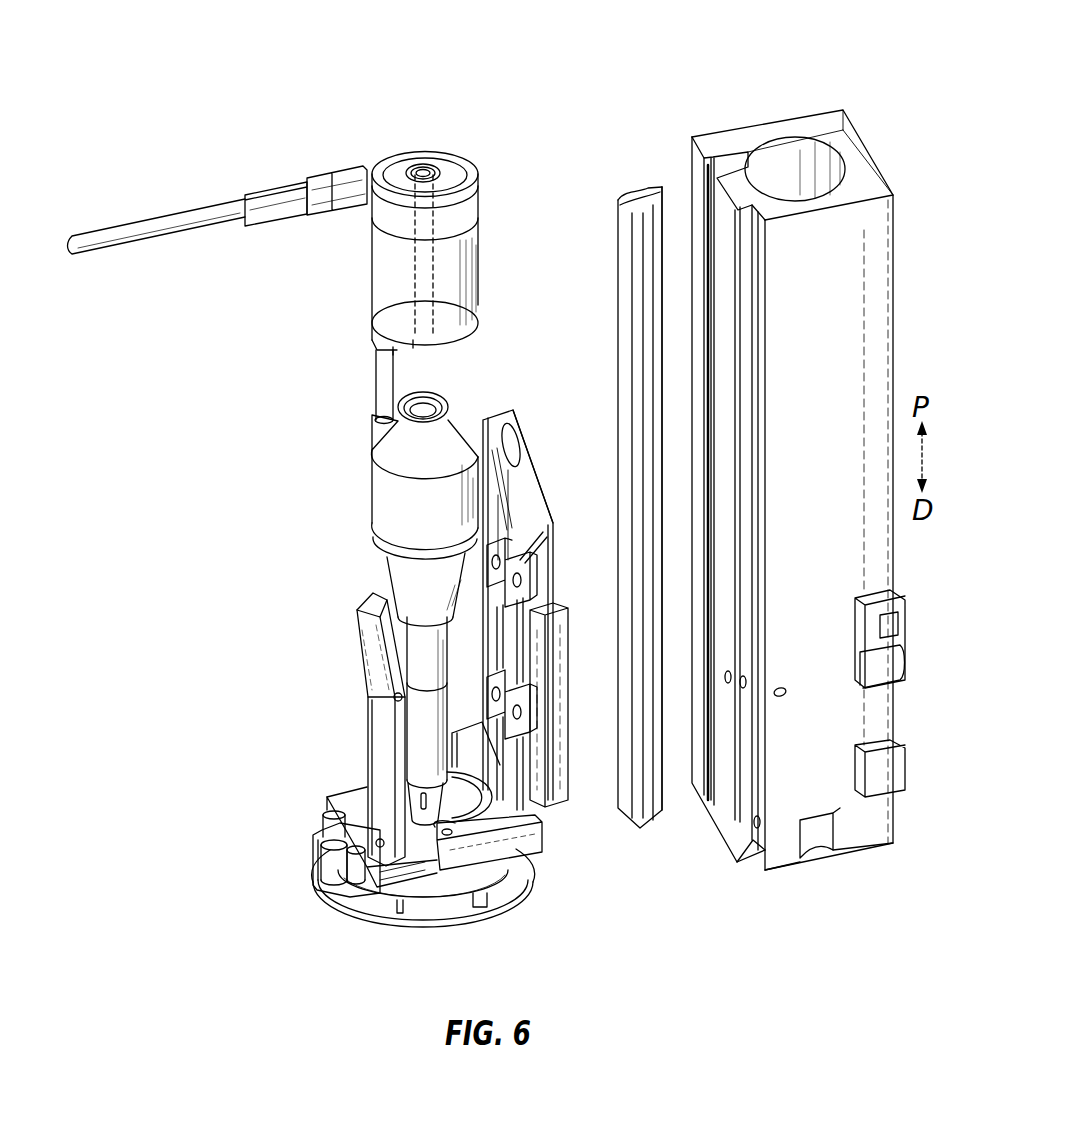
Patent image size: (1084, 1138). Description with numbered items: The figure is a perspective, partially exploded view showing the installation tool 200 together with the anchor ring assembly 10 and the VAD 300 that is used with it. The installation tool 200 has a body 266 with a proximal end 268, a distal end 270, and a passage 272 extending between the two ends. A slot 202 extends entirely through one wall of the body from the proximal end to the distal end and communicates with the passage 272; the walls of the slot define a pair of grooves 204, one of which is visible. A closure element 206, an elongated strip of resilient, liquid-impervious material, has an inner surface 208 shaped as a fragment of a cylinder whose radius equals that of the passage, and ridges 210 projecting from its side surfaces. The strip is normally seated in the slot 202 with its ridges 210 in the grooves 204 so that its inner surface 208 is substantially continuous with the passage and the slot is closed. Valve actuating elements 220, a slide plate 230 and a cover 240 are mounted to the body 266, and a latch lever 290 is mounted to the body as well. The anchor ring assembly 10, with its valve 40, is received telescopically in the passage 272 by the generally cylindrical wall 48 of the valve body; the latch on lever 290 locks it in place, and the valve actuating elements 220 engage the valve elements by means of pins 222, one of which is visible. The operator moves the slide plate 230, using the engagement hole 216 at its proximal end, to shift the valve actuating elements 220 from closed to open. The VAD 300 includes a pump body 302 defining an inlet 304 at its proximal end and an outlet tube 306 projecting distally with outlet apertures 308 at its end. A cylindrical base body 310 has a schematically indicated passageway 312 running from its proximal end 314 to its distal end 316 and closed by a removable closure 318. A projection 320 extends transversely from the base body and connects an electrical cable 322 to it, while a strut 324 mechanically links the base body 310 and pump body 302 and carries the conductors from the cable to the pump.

The anchor ring assembly 10 is at (512, 917).
The valve 40 is at (328, 862).
The semicircular wall 48 is at (417, 840).
The installation tool 200 is at (822, 910).
The slot 202 is at (732, 150).
The grooves 204 is at (703, 163).
The closure element 206 is at (610, 299).
The inner surface 208 is at (628, 213).
The ridges 210 is at (637, 248).
The engagement hole 216 is at (518, 440).
The valve actuating elements 220 is at (548, 566).
The pins 222 is at (449, 838).
The slide plate 230 is at (524, 401).
The cover 240 is at (548, 805).
The body 266 is at (762, 98).
The proximal end 268 is at (850, 148).
The distal end 270 is at (862, 850).
The passage 272 is at (790, 155).
The latch lever 290 is at (370, 757).
The VAD 300 is at (248, 532).
The pump body 302 is at (371, 486).
The inlet 304 is at (430, 403).
The outlet tube 306 is at (418, 728).
The outlet apertures 308 is at (412, 798).
The base body 310 is at (364, 258).
The passageway 312 is at (412, 300).
The proximal end 314 is at (397, 156).
The removable closure 318 is at (424, 163).
The distal end 316 is at (395, 362).
The projection 320 is at (315, 178).
The electrical cable 322 is at (157, 216).
The strut 324 is at (376, 392).